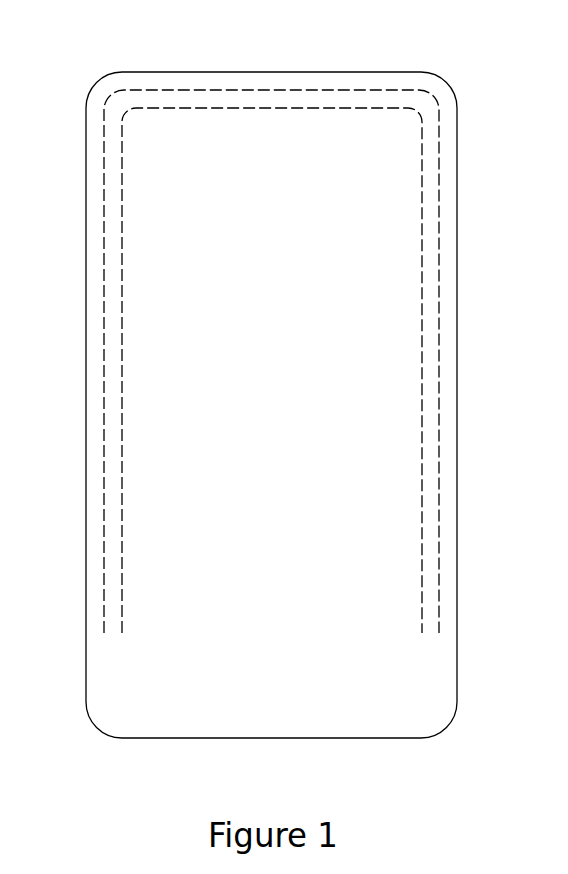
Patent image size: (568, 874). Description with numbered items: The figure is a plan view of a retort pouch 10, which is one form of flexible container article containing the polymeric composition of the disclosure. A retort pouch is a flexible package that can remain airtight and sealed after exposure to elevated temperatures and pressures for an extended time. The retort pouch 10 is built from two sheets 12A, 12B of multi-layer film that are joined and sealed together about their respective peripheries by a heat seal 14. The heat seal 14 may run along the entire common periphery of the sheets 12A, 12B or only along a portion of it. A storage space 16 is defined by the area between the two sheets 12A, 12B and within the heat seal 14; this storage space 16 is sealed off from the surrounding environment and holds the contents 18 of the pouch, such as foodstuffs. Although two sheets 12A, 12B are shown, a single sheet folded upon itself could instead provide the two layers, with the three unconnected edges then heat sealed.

The retort pouch 10 is at (473, 63).
The sheet 12A is at (162, 120).
The sheet 12B is at (137, 202).
The heat seal 14 is at (110, 510).
The storage space 16 is at (407, 367).
The contents 18 is at (407, 577).